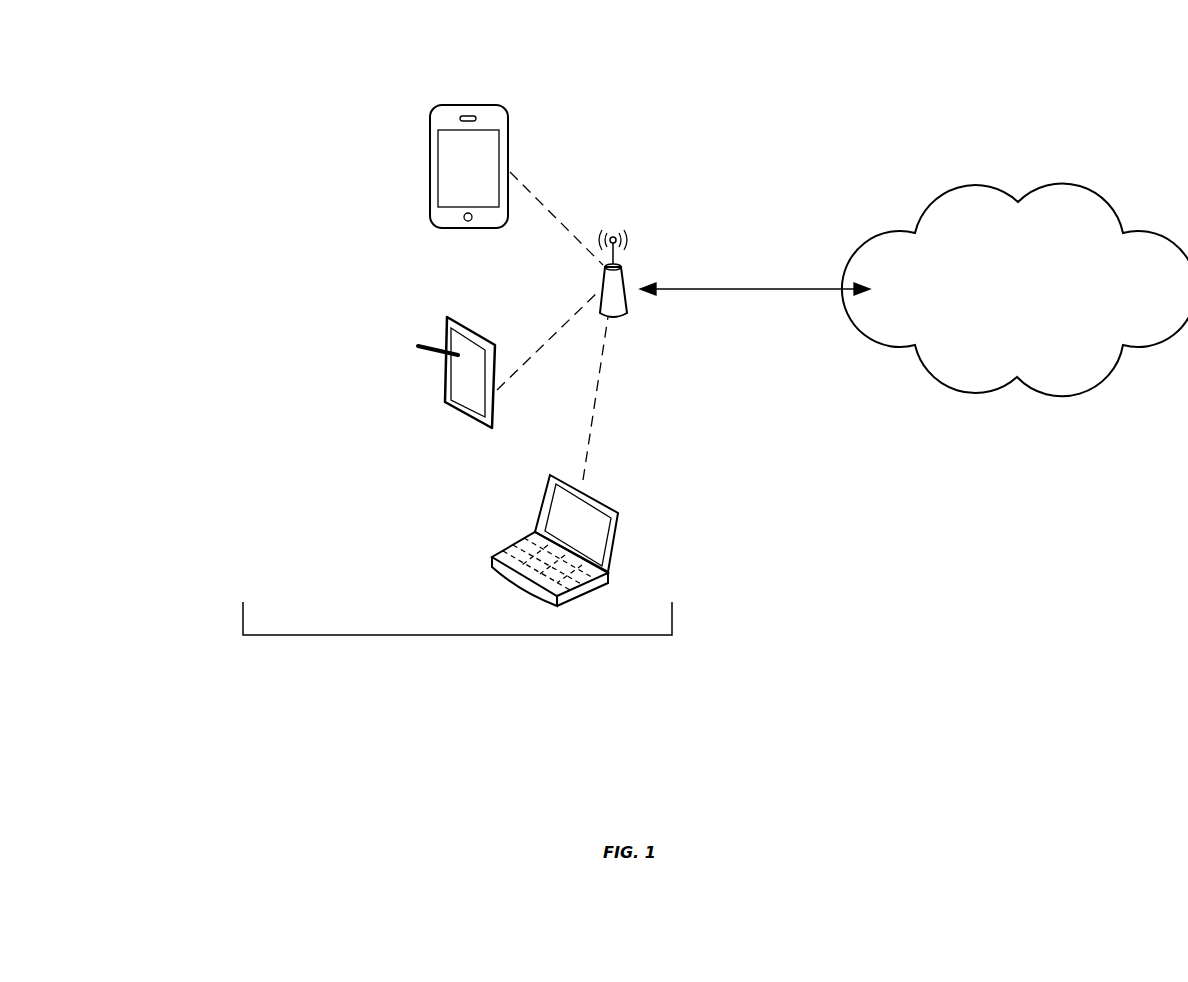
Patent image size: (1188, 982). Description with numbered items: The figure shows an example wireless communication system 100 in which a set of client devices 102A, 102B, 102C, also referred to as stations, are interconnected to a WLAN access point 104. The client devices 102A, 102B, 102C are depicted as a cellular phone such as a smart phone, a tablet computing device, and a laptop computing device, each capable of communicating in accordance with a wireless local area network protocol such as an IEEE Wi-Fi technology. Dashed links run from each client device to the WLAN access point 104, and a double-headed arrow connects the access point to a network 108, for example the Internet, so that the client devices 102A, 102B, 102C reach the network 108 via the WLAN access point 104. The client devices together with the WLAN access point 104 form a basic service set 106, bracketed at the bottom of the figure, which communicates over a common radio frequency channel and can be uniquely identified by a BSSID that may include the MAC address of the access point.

The wireless communication system 100 is at (148, 114).
The client device 102A is at (430, 160).
The client device 102B is at (445, 393).
The client device 102C is at (492, 560).
The WLAN access point 104 is at (628, 313).
The basic service set (BSS) 106 is at (463, 637).
The network 108 is at (1015, 289).